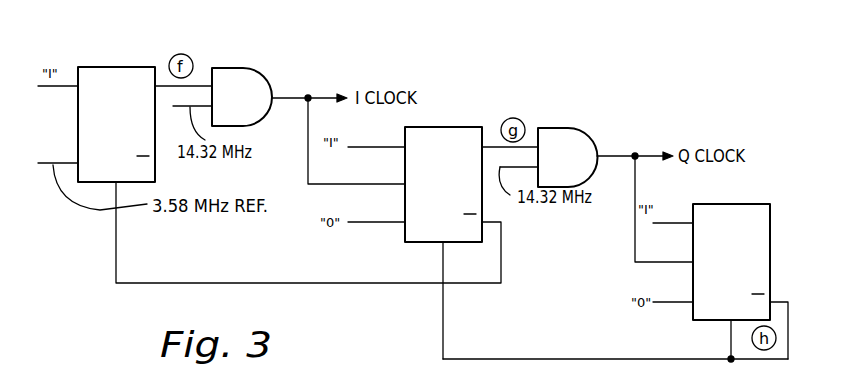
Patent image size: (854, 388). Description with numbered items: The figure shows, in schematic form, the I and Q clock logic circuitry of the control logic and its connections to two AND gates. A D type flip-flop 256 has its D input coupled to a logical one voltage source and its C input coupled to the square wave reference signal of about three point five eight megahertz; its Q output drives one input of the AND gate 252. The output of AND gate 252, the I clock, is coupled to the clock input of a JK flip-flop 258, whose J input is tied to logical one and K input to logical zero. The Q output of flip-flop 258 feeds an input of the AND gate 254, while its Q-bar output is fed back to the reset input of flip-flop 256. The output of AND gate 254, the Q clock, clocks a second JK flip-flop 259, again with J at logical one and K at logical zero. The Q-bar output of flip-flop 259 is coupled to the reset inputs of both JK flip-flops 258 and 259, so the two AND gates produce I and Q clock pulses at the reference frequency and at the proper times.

The AND gate 252 is at (237, 68).
The AND gate 254 is at (572, 128).
The D type flip-flop 256 is at (120, 67).
The JK flip-flop 258 is at (457, 127).
The second JK flip-flop 259 is at (710, 204).